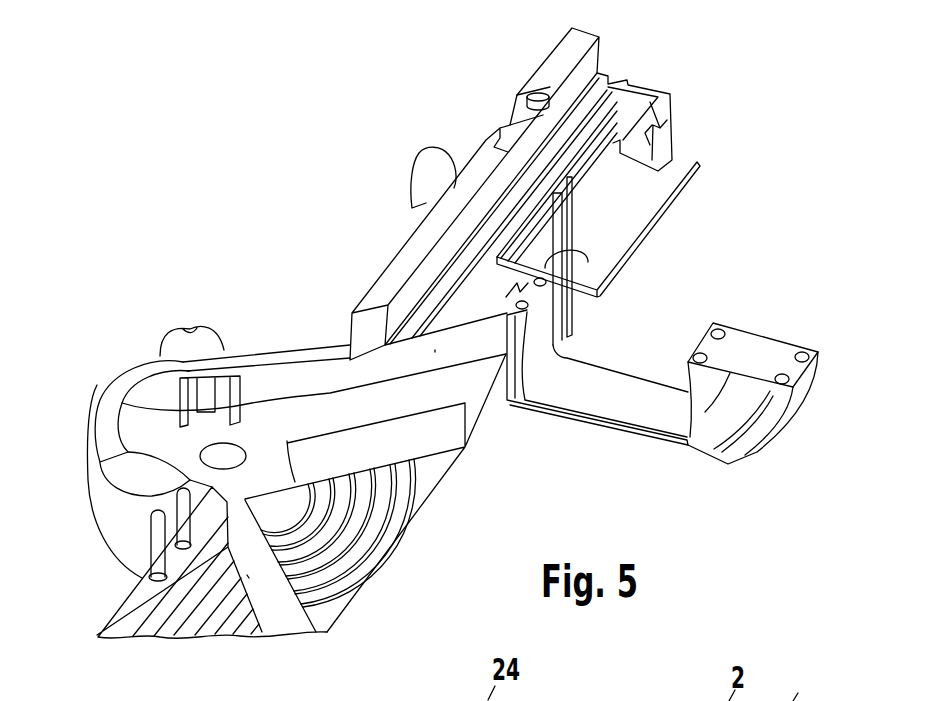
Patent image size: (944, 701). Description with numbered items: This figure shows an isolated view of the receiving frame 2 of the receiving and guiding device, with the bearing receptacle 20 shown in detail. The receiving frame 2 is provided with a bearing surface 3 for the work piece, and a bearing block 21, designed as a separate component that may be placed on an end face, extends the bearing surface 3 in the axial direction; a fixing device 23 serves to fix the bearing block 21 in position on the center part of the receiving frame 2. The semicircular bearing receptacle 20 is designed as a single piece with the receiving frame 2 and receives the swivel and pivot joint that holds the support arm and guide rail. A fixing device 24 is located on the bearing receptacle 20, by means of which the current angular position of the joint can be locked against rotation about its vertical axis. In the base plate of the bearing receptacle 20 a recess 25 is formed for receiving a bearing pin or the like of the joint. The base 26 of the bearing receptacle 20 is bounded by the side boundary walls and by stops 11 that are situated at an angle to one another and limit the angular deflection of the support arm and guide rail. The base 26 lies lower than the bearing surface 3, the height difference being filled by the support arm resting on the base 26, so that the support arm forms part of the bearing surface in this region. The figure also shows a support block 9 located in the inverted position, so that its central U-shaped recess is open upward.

The receiving frame 2 is at (358, 296).
The bearing surface 3 is at (199, 637).
The support block 9 is at (697, 447).
The stops 11 is at (435, 350).
The bearing receptacle 20 is at (110, 410).
The bearing block 21 is at (558, 63).
The fixing device 23 is at (432, 170).
The fixing device 24 is at (191, 340).
The recess 25 is at (230, 455).
The base 26 is at (325, 418).